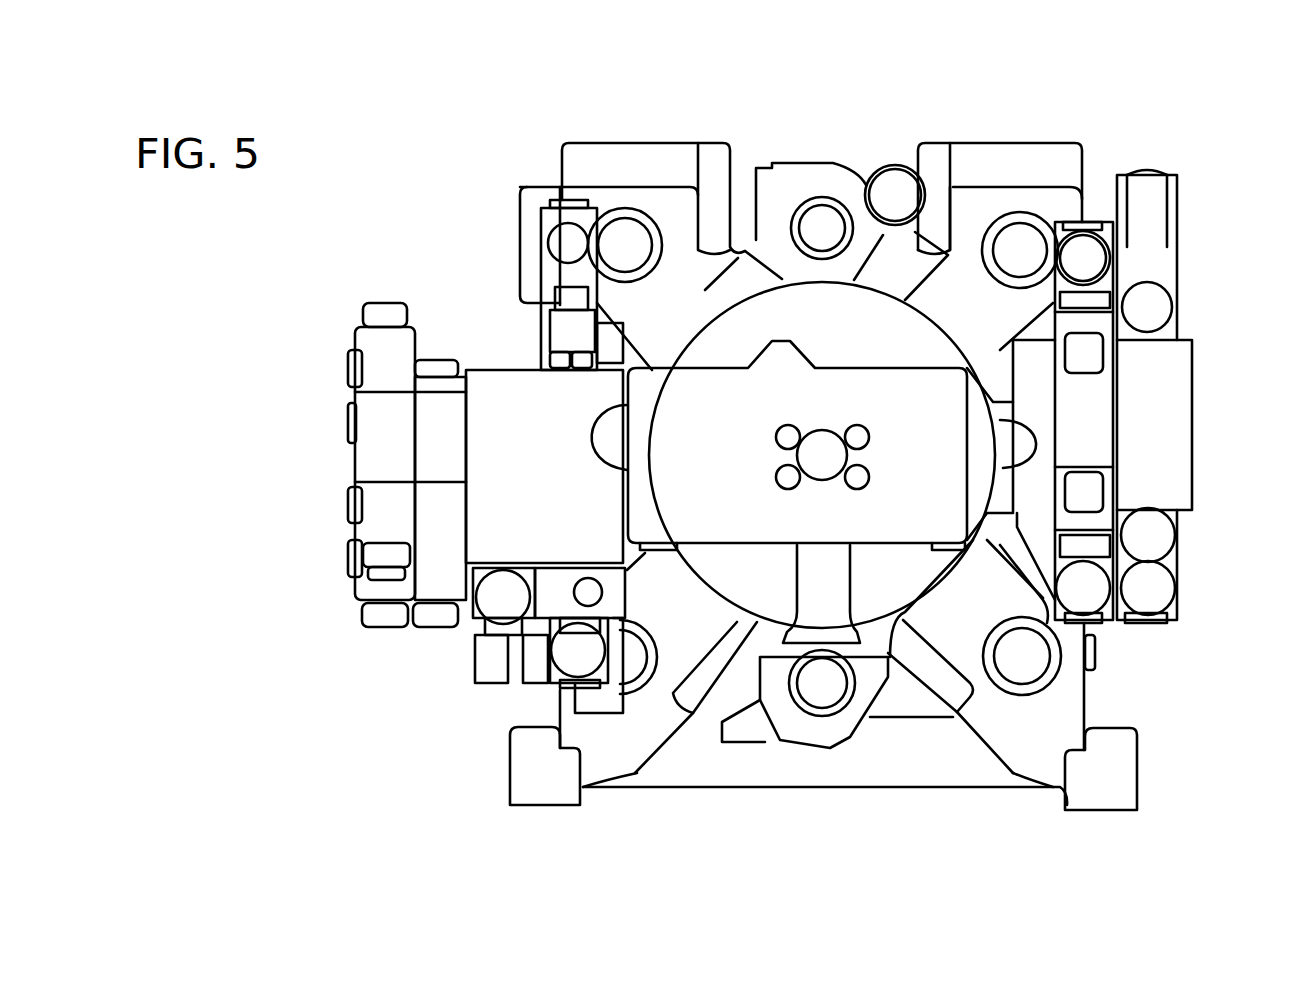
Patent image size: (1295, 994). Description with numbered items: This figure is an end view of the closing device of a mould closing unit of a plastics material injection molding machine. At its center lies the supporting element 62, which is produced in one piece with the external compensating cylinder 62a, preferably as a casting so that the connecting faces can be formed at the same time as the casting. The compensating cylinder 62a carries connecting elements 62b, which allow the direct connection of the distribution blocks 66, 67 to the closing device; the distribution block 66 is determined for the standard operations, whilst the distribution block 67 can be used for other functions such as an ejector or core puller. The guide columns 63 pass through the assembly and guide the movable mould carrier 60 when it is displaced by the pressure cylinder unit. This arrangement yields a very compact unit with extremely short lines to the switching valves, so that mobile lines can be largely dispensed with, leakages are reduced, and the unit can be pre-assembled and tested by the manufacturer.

The movable mould carrier 60 is at (610, 165).
The supporting element 62 is at (700, 287).
The compensating cylinder 62a is at (867, 338).
The connecting elements 62b is at (620, 467).
The guide columns 63 is at (638, 247).
The distribution block 66 is at (560, 485).
The distribution block 67 is at (1160, 422).